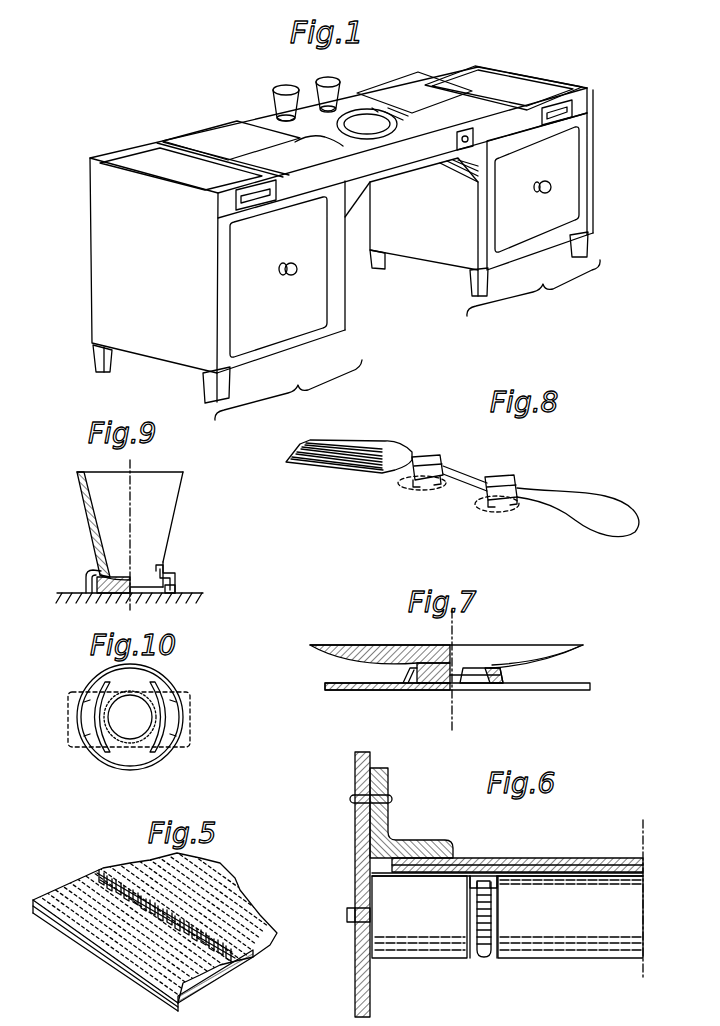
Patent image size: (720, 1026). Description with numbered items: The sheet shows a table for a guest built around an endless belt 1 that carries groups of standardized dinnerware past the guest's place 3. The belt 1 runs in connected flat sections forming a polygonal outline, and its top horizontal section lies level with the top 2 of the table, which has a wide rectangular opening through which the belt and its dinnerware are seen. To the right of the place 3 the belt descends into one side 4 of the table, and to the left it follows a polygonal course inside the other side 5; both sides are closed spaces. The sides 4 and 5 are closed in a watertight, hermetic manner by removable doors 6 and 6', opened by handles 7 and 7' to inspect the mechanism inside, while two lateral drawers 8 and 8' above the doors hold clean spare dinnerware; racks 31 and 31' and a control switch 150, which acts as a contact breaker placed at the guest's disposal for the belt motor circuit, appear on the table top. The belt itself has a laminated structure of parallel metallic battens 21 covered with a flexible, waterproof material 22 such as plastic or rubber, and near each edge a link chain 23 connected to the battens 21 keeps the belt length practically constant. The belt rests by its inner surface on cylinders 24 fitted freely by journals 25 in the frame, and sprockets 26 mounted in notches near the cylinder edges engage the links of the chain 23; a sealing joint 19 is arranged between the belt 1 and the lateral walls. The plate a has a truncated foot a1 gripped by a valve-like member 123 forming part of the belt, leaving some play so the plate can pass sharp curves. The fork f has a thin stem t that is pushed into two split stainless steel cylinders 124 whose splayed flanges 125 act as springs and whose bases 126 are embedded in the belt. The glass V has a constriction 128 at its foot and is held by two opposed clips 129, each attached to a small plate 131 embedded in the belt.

In FIG. 1, the endless belt 1 is at (268, 128).
In FIG. 9, the endless belt 1 is at (63, 593).
In FIG. 7, the endless belt 1 is at (367, 687).
In FIG. 6, the endless belt 1 is at (502, 858).
In FIG. 1, the top of the table 2 is at (162, 172).
In FIG. 1, the guest's place 3 is at (402, 278).
In FIG. 1, the side of the table 4 is at (593, 152).
In FIG. 1, the side of the table 5 is at (122, 253).
In FIG. 1, the removable door 6 is at (555, 189).
In FIG. 1, the handle 7 is at (545, 231).
In FIG. 1, the lateral drawer 8 is at (578, 110).
In FIG. 1, the rack 31 is at (414, 78).
In FIG. 1, the rack 31' is at (231, 123).
In FIG. 1, the removable door 6' is at (278, 294).
In FIG. 1, the handle 7' is at (327, 288).
In FIG. 1, the lateral drawer 8' is at (266, 210).
In FIG. 1, the control switch 150 is at (475, 138).
In FIG. 9, the glass V is at (155, 498).
In FIG. 10, the glass V is at (145, 755).
In FIG. 9, the clip 129 is at (92, 563).
In FIG. 10, the clip 129 is at (155, 682).
In FIG. 9, the constriction 128 is at (177, 579).
In FIG. 8, the fork f is at (392, 450).
In FIG. 8, the stem t is at (463, 477).
In FIG. 8, the small cylinder 124 is at (415, 483).
In FIG. 8, the splayed flange 125 is at (427, 458).
In FIG. 8, the base 126 is at (425, 490).
In FIG. 7, the plate a is at (527, 658).
In FIG. 7, the foot a1 is at (425, 680).
In FIG. 7, the retaining clip 123 is at (403, 677).
In FIG. 10, the small plate 131 is at (190, 712).
In FIG. 5, the metallic batten 21 is at (217, 895).
In FIG. 6, the metallic batten 21 is at (555, 862).
In FIG. 5, the flexible waterproof material 22 is at (233, 967).
In FIG. 5, the link chain 23 is at (113, 872).
In FIG. 6, the link chain 23 is at (497, 882).
In FIG. 6, the sealing joint 19 is at (400, 840).
In FIG. 6, the cylinder 24 is at (433, 928).
In FIG. 6, the journal 25 is at (360, 913).
In FIG. 6, the sprocket 26 is at (483, 953).